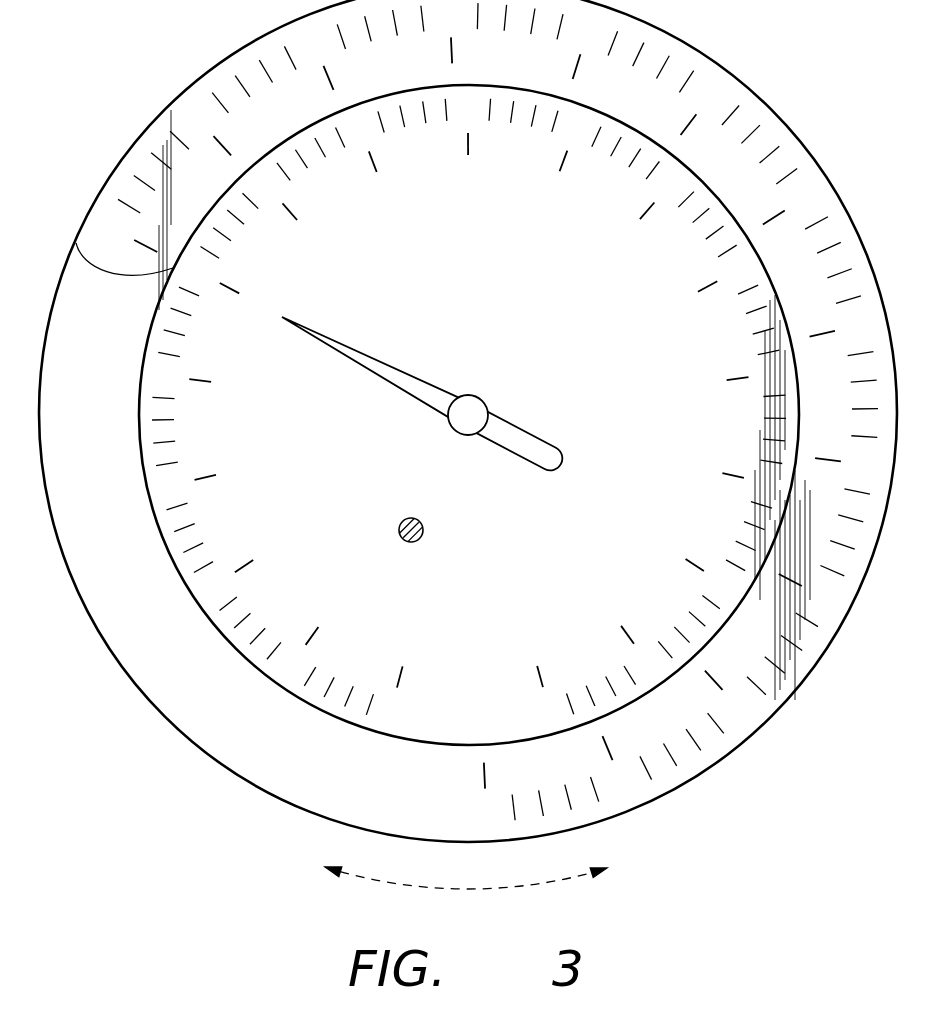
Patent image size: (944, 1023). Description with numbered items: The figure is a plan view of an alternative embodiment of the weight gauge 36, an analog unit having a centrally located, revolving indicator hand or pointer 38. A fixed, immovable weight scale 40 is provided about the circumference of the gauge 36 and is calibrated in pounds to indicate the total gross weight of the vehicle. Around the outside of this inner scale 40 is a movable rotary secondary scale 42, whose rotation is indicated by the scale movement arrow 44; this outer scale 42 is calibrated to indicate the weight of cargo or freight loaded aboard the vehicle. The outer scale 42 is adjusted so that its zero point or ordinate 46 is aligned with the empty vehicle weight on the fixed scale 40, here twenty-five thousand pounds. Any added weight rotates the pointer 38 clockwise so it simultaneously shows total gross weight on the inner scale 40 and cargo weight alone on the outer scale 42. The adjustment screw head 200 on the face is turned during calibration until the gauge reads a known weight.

The weight gauge 36 is at (457, 463).
The indicator hand or pointer 38 is at (332, 337).
The fixed weight scale 40 is at (687, 600).
The movable rotary secondary scale 42 is at (694, 757).
The scale movement arrow 44 is at (530, 884).
The zero point or ordinate 46 is at (77, 242).
The adjustment screw head 200 is at (398, 530).